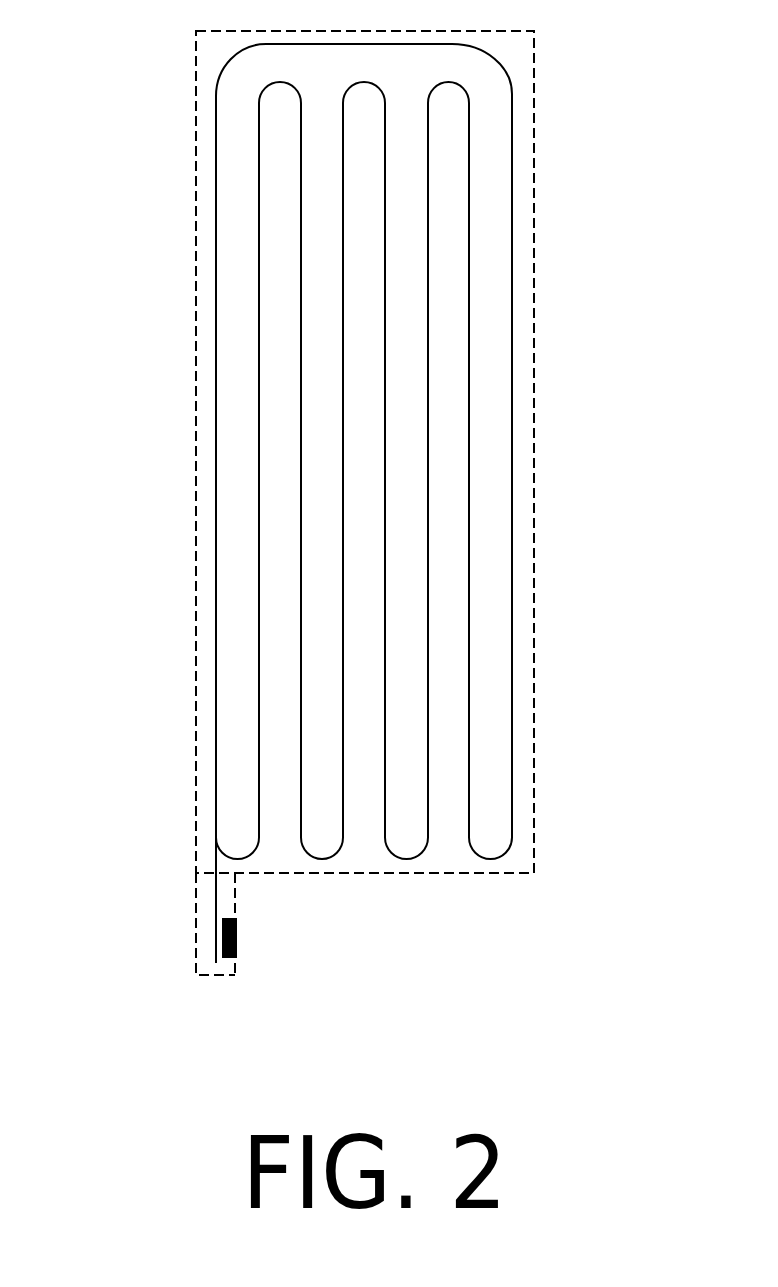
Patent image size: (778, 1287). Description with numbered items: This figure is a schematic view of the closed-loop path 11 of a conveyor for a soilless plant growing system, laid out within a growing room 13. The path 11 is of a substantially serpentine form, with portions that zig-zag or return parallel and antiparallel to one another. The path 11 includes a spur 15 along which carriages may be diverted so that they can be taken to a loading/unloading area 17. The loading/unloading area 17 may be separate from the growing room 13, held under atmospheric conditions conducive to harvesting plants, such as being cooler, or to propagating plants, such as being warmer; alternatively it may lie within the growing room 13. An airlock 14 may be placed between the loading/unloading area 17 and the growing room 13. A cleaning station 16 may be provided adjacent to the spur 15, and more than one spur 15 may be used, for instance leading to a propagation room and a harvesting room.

The closed-loop path 11 is at (513, 88).
The growing room 13 is at (535, 307).
The airlock 14 is at (223, 875).
The spur 15 is at (217, 897).
The cleaning station 16 is at (233, 962).
The loading/unloading area 17 is at (198, 955).